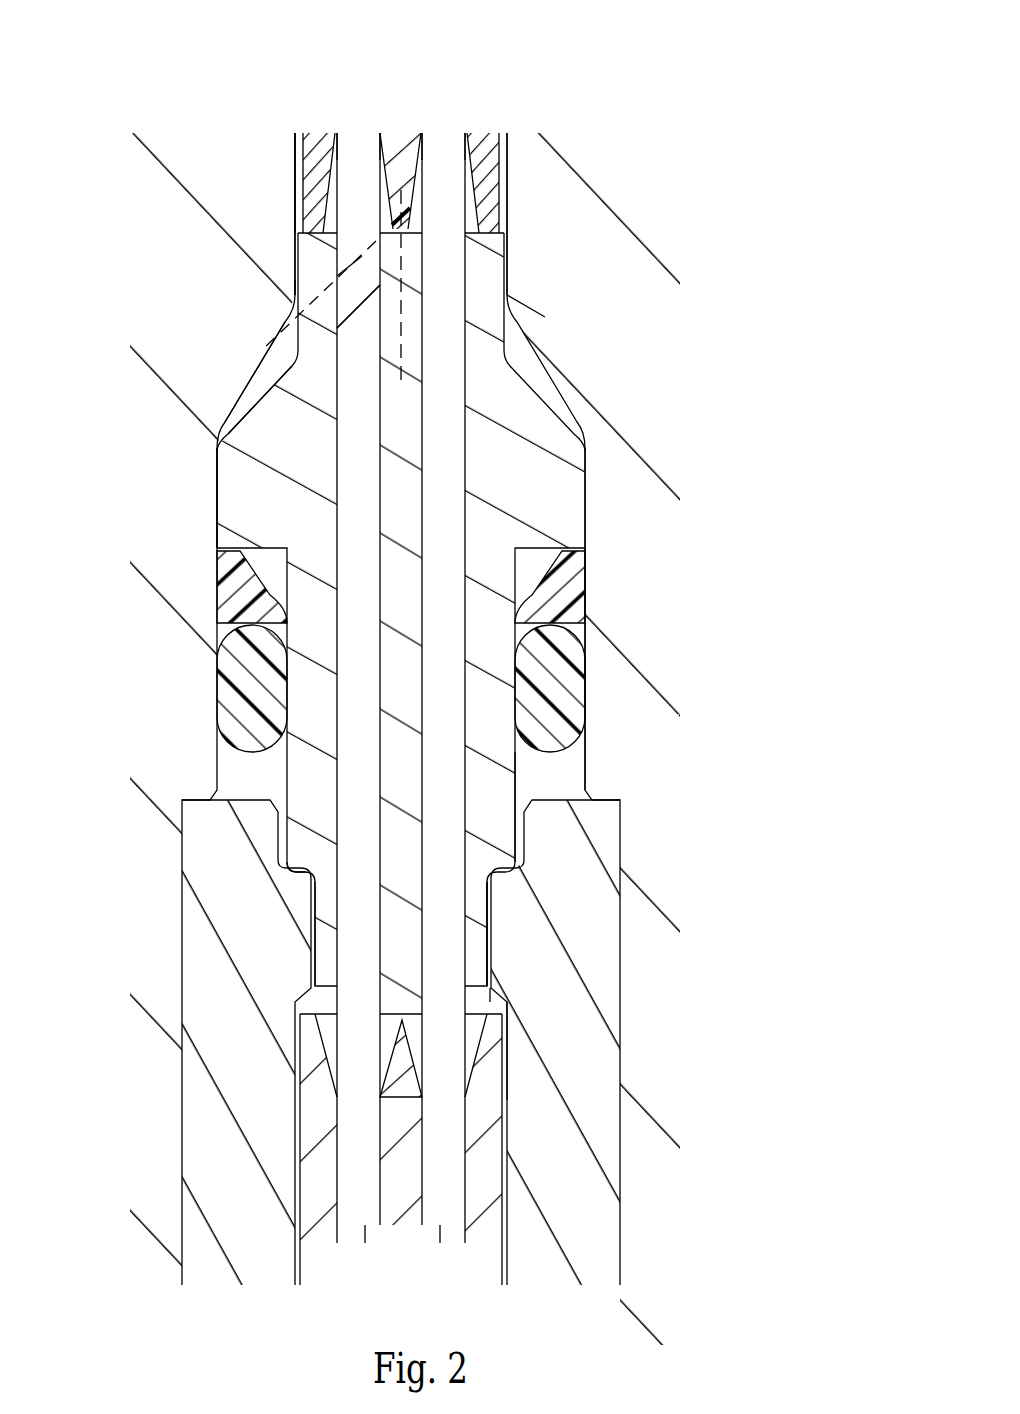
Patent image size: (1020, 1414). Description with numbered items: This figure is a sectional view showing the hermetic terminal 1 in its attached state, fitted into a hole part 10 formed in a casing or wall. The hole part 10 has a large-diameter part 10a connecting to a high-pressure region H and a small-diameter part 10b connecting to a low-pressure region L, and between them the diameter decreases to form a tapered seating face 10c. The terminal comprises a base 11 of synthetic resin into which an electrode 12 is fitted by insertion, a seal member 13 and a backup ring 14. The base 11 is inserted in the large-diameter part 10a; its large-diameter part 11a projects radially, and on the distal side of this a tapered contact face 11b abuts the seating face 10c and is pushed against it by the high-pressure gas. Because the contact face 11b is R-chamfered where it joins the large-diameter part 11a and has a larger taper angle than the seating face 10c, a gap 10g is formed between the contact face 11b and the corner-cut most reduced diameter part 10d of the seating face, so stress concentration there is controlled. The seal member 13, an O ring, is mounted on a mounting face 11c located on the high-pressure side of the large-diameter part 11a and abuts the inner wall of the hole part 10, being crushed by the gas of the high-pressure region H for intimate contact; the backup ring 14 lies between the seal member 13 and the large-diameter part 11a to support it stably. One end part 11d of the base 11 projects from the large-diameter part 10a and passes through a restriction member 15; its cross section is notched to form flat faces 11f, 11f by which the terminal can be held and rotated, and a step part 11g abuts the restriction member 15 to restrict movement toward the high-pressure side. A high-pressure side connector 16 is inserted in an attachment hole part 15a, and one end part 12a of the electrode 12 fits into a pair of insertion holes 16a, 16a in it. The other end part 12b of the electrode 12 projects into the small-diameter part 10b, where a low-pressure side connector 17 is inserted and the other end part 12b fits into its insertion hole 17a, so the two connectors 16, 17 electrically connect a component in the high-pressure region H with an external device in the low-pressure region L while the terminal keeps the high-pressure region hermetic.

The hermetic terminal 1 is at (560, 306).
The hole part 10 is at (460, 695).
The large-diameter part 10a is at (590, 478).
The small-diameter part 10b is at (490, 145).
The seating face 10c is at (283, 356).
The most reduced diameter part 10d is at (295, 268).
The gap 10g is at (296, 313).
The base 11 is at (567, 523).
The large-diameter part 11a is at (228, 500).
The contact face 11b is at (275, 378).
The mounting face 11c is at (586, 767).
The one end part 11d is at (473, 898).
The flat face 11f is at (312, 912).
The step part 11g is at (282, 873).
The electrode 12 is at (438, 548).
The one end part 12a is at (440, 1245).
The other end part 12b is at (358, 147).
The seal member 13 is at (588, 693).
The backup ring 14 is at (583, 581).
The restriction member 15 is at (590, 1219).
The attachment hole part 15a is at (505, 1092).
The high-pressure side connector 16 is at (490, 1257).
The insertion hole 16a is at (380, 1195).
The low-pressure side connector 17 is at (318, 146).
The insertion hole 17a is at (453, 147).
The low-pressure region L is at (293, 228).
The high-pressure region H is at (480, 1003).